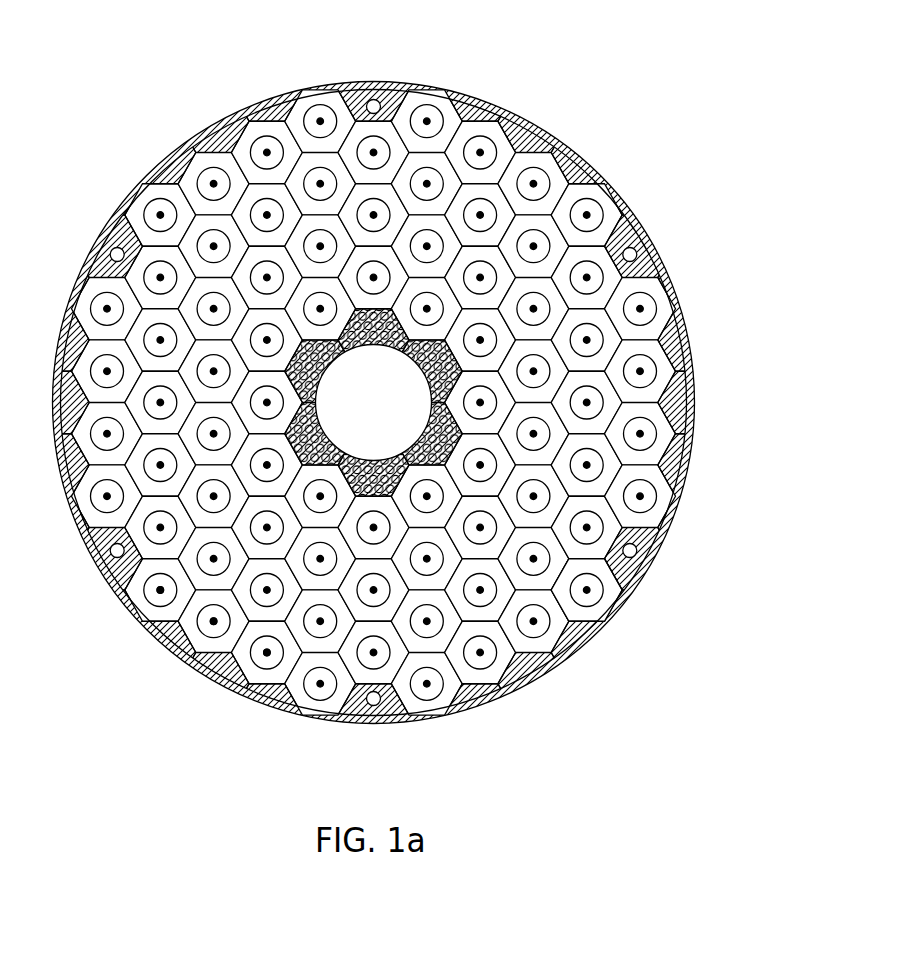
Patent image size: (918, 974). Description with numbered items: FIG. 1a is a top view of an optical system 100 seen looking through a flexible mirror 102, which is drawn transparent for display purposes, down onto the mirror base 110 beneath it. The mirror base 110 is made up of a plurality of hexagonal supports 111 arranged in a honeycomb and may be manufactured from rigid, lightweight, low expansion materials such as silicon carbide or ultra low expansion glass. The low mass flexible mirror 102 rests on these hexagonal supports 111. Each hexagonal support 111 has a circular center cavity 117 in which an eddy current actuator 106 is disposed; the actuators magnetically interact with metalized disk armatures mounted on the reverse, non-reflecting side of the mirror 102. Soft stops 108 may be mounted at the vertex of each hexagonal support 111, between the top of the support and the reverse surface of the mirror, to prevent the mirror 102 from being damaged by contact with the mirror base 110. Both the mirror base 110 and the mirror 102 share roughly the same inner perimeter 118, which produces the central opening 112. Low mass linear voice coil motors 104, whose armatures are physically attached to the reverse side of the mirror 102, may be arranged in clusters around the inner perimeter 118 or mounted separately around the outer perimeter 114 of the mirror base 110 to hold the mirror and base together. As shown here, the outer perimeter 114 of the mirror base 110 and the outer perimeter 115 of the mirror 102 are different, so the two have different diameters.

The optical system 100 is at (207, 56).
The flexible mirror 102 is at (649, 247).
The linear voice coil motors 104 is at (456, 447).
The eddy current actuator 106 is at (254, 651).
The soft stops 108 is at (473, 689).
The mirror base 110 is at (700, 378).
The hexagonal supports 111 is at (673, 459).
The central opening 112 is at (388, 416).
The outer perimeter of mirror base 114 is at (680, 286).
The outer perimeter of mirror 115 is at (689, 337).
The circular center cavity 117 is at (614, 593).
The inner perimeter 118 is at (398, 352).